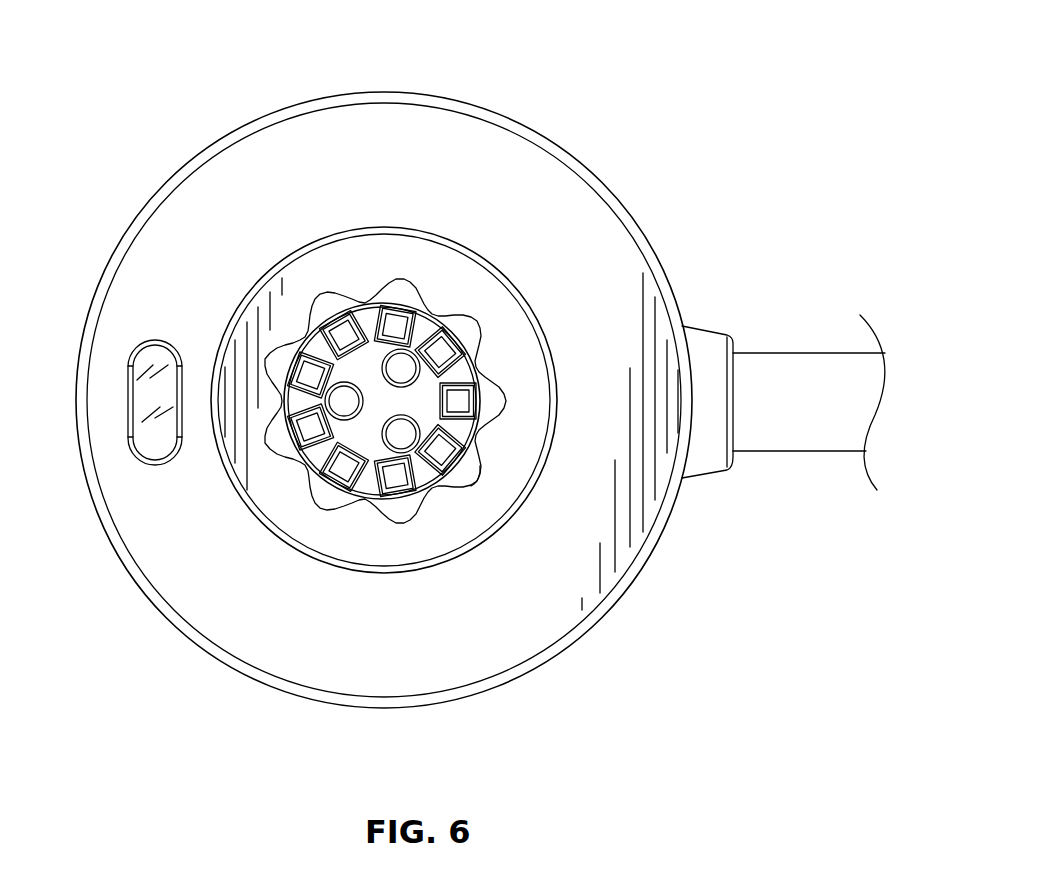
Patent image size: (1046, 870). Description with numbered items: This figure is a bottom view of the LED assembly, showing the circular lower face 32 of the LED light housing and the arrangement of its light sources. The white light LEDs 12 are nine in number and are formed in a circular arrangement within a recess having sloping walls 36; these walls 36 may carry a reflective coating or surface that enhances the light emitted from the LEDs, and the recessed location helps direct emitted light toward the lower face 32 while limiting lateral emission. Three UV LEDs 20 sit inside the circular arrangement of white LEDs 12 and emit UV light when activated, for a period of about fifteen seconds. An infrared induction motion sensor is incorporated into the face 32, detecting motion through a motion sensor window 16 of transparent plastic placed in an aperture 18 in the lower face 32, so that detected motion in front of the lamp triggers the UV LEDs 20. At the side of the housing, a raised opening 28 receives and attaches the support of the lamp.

The LEDs 12 is at (443, 297).
The motion sensor window 16 is at (157, 434).
The aperture 18 is at (135, 353).
The UV LEDs 20 is at (398, 363).
The raised opening 28 is at (702, 328).
The circular lower face 32 is at (349, 668).
The tapered interior walls 36 is at (470, 493).